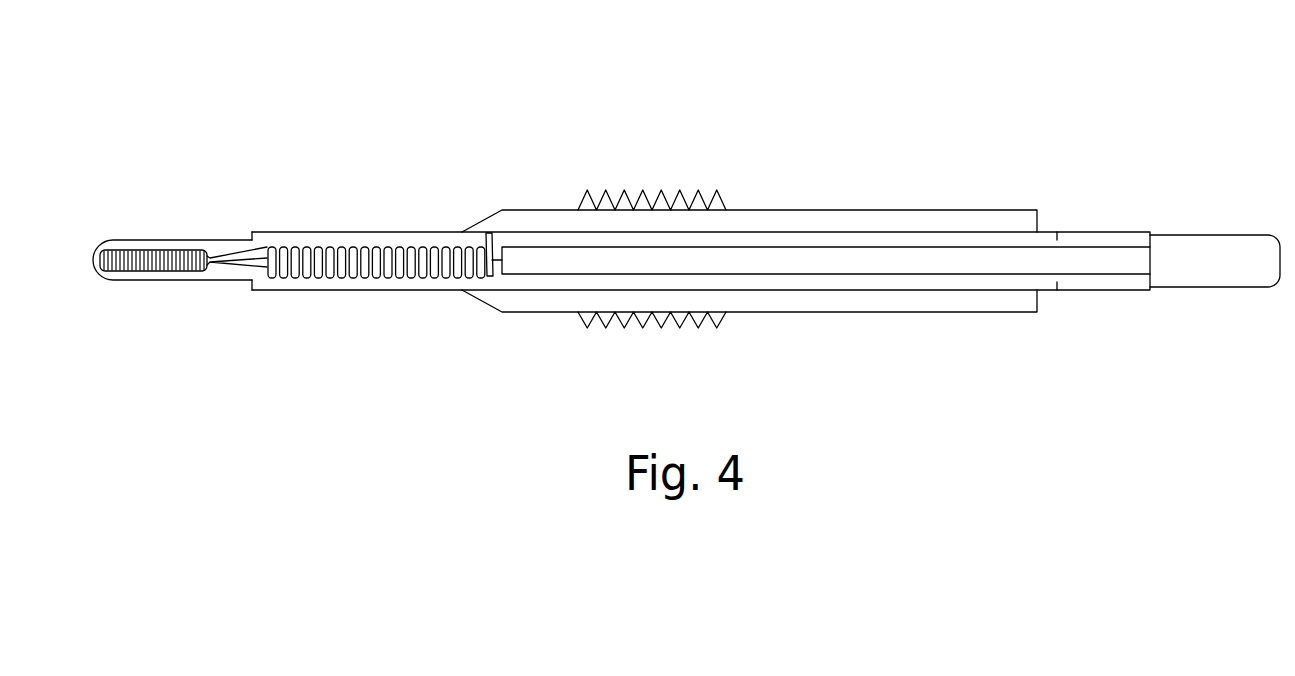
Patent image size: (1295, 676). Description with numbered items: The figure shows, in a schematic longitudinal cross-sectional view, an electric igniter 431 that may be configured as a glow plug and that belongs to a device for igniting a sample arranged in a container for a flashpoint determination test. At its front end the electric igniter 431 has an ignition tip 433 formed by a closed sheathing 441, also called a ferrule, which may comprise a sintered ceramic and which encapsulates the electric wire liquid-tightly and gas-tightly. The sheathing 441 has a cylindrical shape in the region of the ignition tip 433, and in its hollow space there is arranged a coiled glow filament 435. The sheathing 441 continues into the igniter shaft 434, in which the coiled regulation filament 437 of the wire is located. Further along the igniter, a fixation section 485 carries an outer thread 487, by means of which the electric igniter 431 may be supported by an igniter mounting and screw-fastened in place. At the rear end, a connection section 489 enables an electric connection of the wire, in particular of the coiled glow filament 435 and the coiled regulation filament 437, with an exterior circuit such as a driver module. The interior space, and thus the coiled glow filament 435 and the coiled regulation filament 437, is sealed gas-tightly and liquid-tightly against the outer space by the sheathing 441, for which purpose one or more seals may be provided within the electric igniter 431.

The electric igniter 431 is at (1108, 88).
The ignition tip 433 is at (145, 313).
The igniter shaft 434 is at (246, 348).
The coiled glow filament 435 is at (177, 250).
The coiled regulation filament 437 is at (363, 247).
The sheathing 441 is at (128, 240).
The fixation section 485 is at (463, 350).
The outer thread 487 is at (713, 208).
The connection section 489 is at (1123, 322).